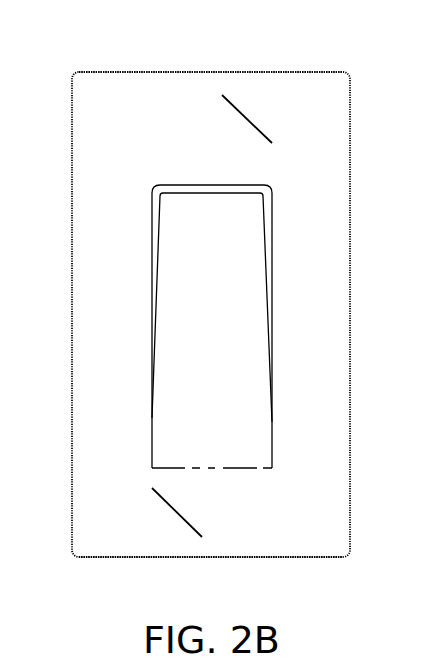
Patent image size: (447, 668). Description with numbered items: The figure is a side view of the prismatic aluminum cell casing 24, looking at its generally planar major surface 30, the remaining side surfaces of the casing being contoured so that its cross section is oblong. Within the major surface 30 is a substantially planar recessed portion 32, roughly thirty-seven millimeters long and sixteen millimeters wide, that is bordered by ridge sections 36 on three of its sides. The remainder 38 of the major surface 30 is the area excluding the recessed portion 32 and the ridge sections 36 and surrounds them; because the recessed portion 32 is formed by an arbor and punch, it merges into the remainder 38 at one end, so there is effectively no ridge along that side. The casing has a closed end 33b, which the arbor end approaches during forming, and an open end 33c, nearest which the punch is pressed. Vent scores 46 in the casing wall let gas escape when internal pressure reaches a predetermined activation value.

The cell casing 24 is at (216, 316).
The major surface 30 is at (85, 153).
The recessed portion 32 is at (225, 341).
The closed end 33b is at (210, 557).
The open end 33c is at (210, 72).
The ridge sections 36 is at (220, 194).
The remainder 38 is at (128, 123).
The vent scores 46 is at (248, 118).